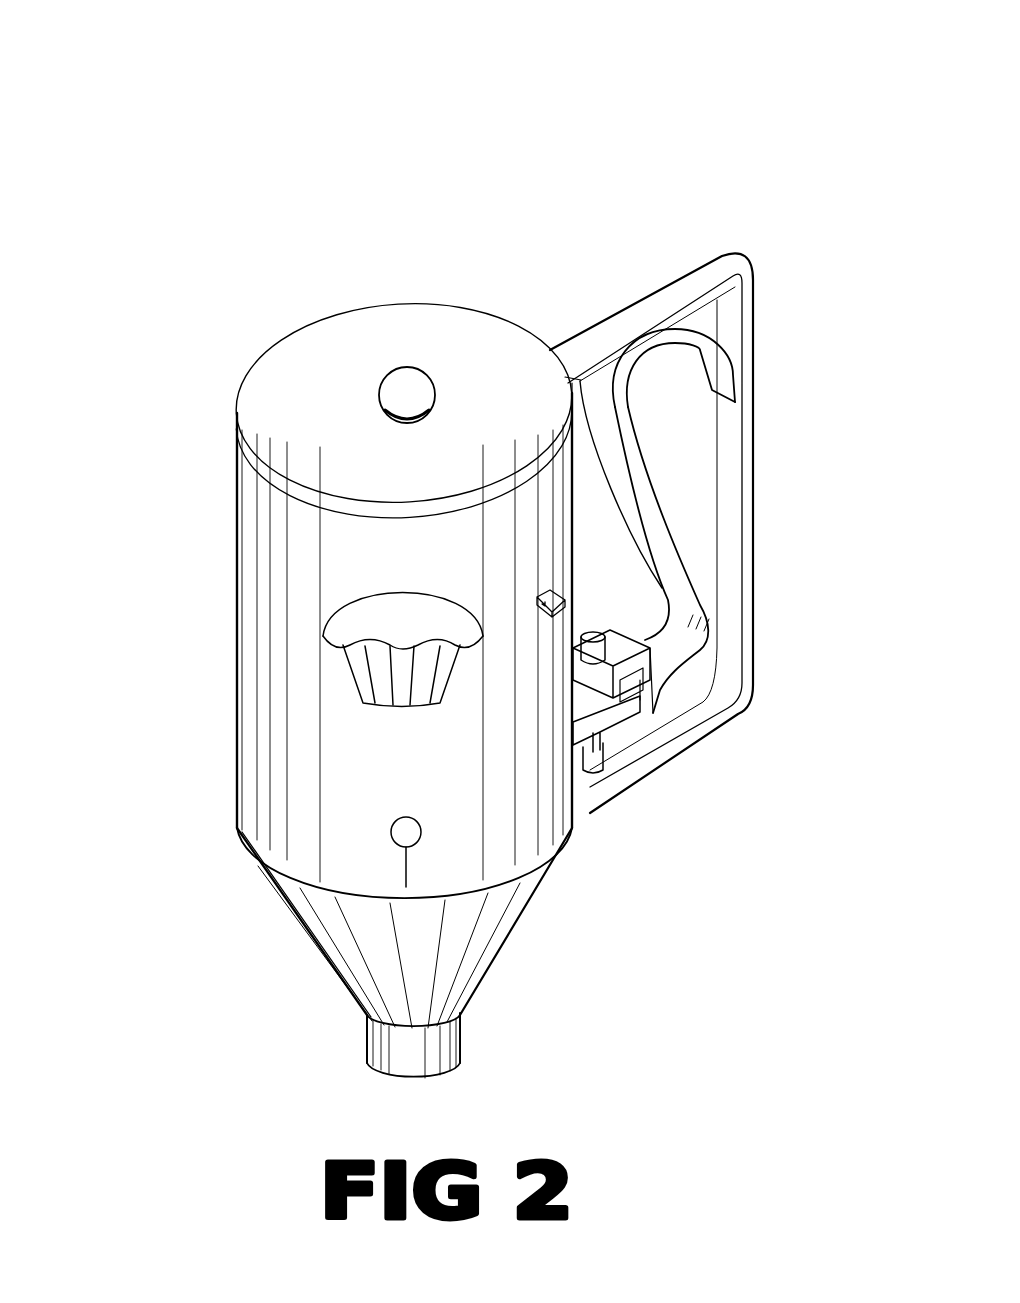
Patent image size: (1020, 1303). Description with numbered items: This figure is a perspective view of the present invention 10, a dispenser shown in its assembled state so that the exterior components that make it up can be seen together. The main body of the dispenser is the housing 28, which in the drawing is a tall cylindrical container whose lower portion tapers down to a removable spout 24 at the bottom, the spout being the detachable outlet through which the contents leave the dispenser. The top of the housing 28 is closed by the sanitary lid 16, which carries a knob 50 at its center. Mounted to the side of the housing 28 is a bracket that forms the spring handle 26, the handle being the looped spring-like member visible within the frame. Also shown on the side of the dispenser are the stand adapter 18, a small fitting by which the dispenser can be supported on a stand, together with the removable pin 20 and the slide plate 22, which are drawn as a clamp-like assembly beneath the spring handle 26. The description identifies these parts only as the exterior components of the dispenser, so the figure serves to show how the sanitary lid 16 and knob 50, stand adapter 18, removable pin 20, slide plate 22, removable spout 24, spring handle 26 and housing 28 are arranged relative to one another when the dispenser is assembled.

The present invention 10 is at (676, 193).
The sanitary lid 16 is at (394, 308).
The knob 50 is at (427, 366).
The housing 28 is at (237, 602).
The removable spout 24 is at (410, 1082).
The spring handle 26 is at (650, 445).
The stand adapter 18 is at (560, 599).
The removable pin 20 is at (603, 655).
The slide plate 22 is at (607, 717).